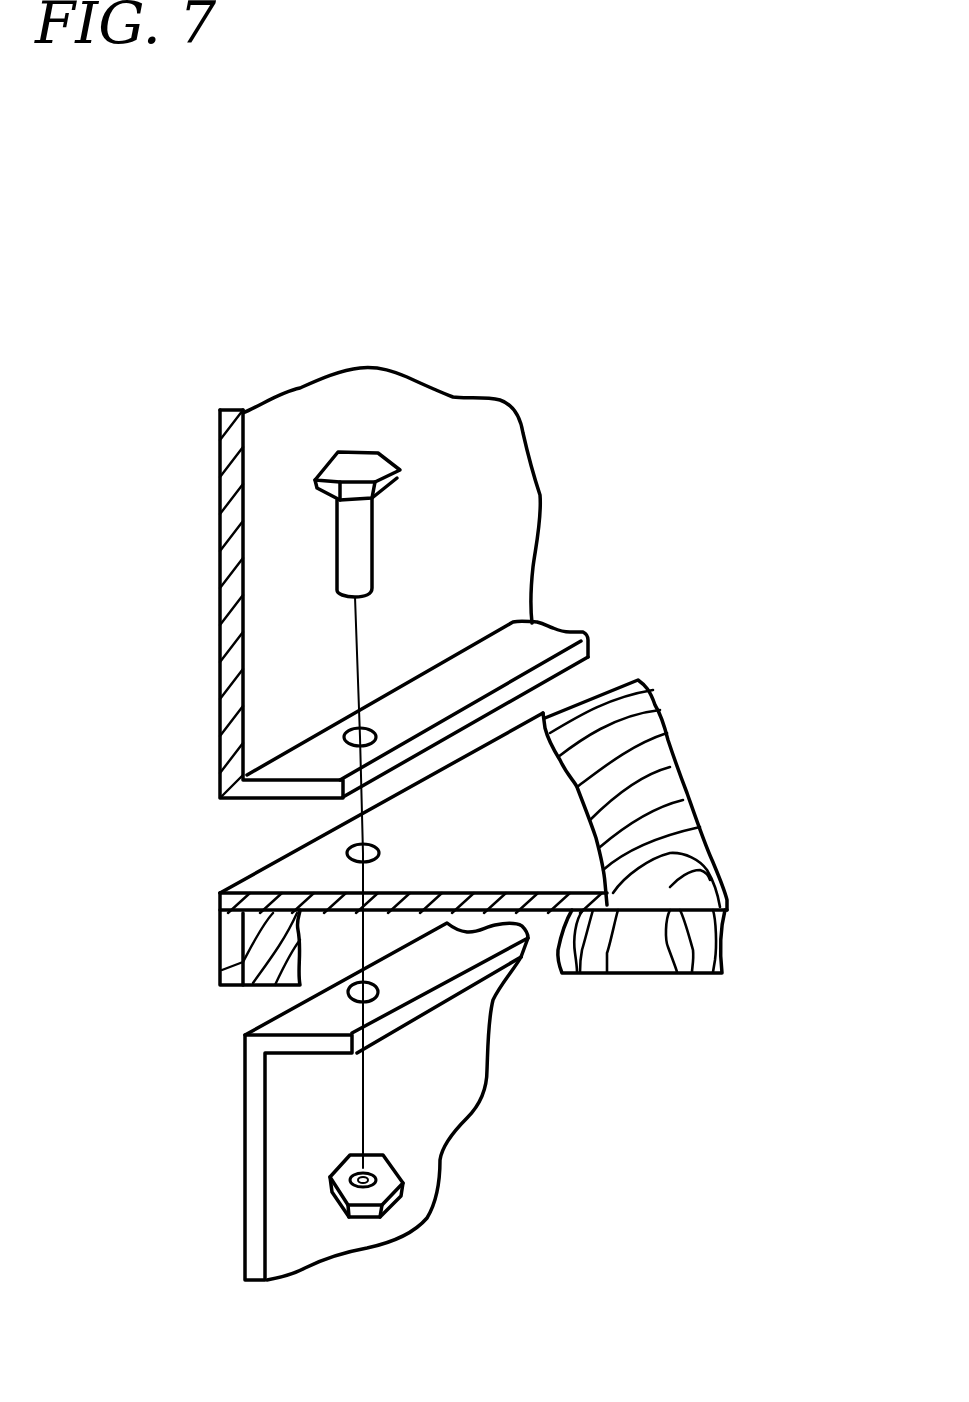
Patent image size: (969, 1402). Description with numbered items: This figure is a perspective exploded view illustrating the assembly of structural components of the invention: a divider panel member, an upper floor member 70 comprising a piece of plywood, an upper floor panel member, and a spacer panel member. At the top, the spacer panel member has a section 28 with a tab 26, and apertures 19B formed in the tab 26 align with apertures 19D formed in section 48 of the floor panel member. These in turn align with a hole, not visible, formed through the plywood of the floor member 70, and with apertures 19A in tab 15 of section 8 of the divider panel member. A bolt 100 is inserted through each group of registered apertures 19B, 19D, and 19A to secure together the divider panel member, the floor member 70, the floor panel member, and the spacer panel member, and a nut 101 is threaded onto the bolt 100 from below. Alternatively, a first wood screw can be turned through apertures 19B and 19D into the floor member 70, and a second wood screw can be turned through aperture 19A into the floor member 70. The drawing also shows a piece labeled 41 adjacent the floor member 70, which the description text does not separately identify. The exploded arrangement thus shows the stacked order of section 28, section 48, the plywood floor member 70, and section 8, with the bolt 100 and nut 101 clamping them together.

The section 8 is at (450, 1196).
The tab 15 is at (298, 1025).
The apertures 19A is at (379, 990).
The apertures 19B is at (374, 731).
The apertures 19D is at (381, 852).
The tab 26 is at (530, 630).
The section 28 is at (542, 466).
The ledger plate 41 is at (215, 948).
The section 48 is at (553, 716).
The upper floor member 70 is at (742, 882).
The bolt 100 is at (395, 530).
The nut 101 is at (333, 1208).